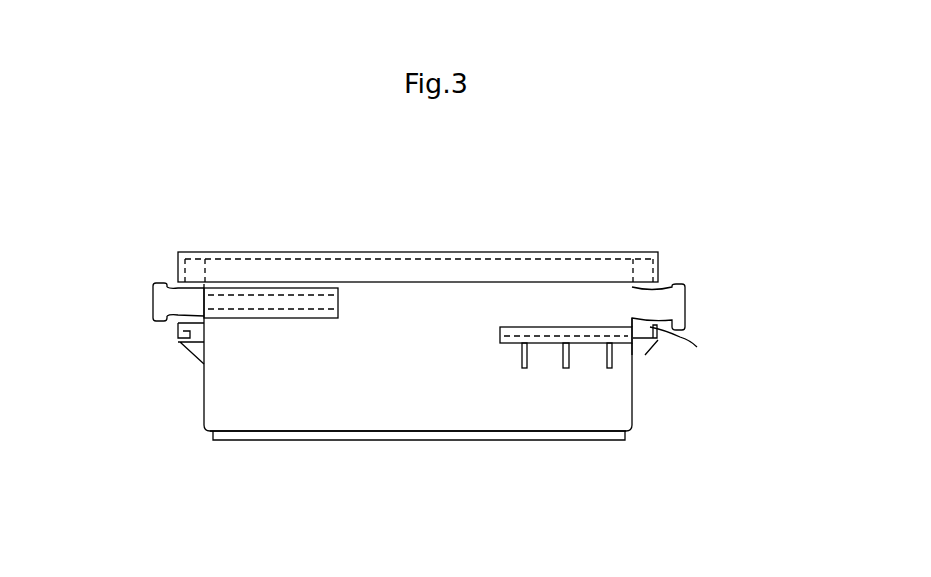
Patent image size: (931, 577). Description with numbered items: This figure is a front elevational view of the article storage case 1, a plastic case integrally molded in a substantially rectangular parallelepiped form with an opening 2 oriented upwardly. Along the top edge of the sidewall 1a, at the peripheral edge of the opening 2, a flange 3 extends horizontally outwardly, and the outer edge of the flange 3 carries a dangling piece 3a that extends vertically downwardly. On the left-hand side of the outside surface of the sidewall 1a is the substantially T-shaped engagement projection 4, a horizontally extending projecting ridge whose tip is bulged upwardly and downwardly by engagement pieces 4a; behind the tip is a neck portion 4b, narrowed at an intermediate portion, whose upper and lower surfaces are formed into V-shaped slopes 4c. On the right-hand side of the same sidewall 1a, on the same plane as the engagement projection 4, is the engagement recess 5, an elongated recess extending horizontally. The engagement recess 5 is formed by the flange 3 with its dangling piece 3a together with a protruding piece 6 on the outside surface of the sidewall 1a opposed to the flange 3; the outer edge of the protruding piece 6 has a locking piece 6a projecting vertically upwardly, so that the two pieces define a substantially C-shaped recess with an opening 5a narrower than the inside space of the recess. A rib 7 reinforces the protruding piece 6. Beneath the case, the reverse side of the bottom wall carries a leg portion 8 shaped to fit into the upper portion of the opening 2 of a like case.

The article storage case 1 is at (322, 252).
The sidewall 1a is at (390, 388).
The opening 2 is at (386, 252).
The flange 3 is at (478, 252).
The dangling piece 3a is at (507, 272).
The engagement projection 4 is at (152, 301).
The engagement piece 4a is at (158, 285).
The neck portion 4b is at (185, 305).
The V-shaped slope 4c is at (172, 288).
The engagement recess 5 is at (661, 292).
The opening of the engagement recess 5a is at (567, 300).
The protruding piece 6 is at (575, 345).
The locking piece 6a is at (598, 334).
The rib 7 is at (522, 352).
The leg portion 8 is at (470, 438).